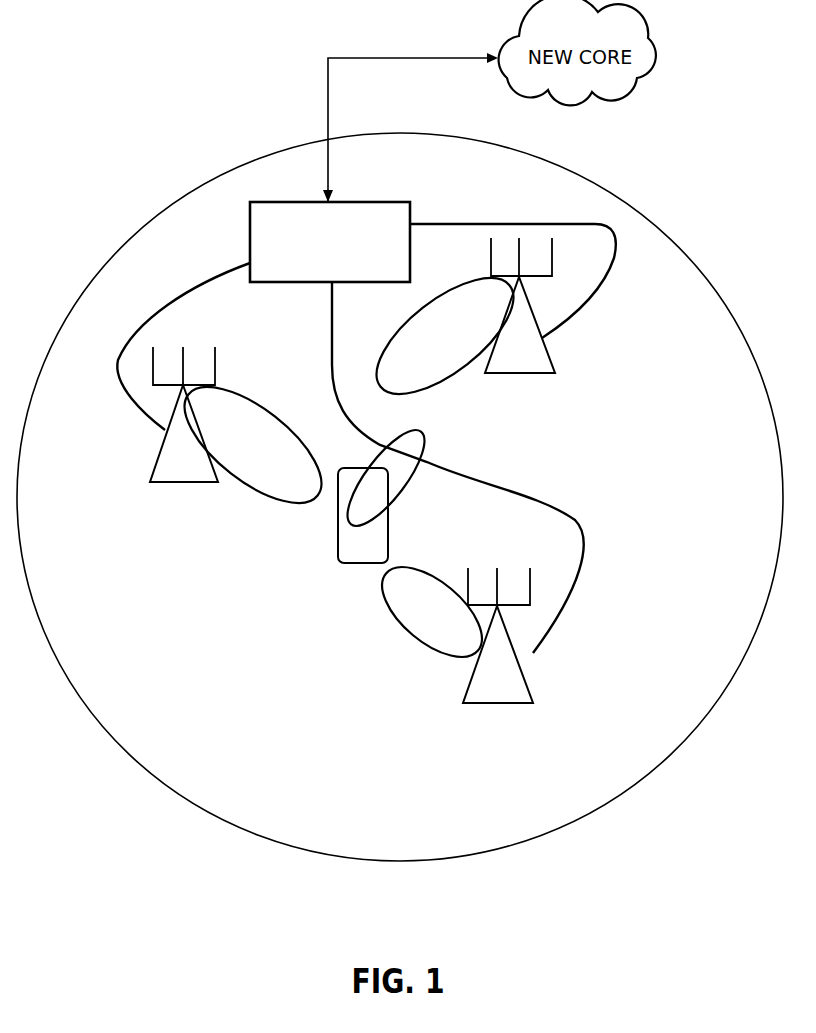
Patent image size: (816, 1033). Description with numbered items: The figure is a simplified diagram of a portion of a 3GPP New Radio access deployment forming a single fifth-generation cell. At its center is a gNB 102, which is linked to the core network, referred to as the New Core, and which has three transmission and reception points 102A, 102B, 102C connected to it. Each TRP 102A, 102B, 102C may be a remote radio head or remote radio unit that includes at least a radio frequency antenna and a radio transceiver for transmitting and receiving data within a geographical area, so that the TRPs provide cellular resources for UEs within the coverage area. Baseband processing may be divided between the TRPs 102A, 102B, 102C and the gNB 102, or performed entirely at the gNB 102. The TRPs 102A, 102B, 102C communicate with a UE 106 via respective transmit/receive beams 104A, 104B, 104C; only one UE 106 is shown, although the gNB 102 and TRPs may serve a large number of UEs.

The gNB 102 is at (312, 253).
The transmission and reception point (TRP) 102A is at (160, 475).
The transmission and reception point (TRP) 102B is at (495, 367).
The transmission and reception point (TRP) 102C is at (475, 697).
The transmit/receive beam 104A is at (229, 448).
The transmit/receive beam 104B is at (425, 346).
The transmit/receive beam 104C is at (465, 630).
The UE 106 is at (348, 557).